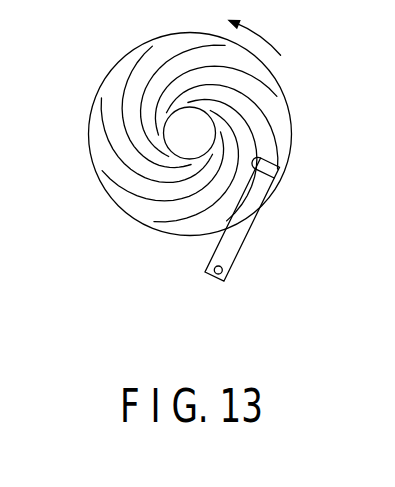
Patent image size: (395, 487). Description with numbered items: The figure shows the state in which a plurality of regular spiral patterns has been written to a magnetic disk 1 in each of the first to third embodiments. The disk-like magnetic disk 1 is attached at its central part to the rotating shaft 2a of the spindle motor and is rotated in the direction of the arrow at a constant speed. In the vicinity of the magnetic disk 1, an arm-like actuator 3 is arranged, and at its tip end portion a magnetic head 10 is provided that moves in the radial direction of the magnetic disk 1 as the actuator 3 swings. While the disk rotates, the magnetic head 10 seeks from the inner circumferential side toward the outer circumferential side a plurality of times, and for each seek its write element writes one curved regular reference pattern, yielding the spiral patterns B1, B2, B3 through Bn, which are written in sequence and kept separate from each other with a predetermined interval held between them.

The magnetic disk 1 is at (124, 56).
The rotating shaft 2a is at (185, 135).
The regular reference pattern B1 is at (253, 123).
The regular reference pattern B2 is at (178, 222).
The regular reference pattern B3 is at (130, 192).
The regular reference pattern Bn is at (276, 146).
The actuator 3 is at (230, 279).
The magnetic head 10 is at (270, 182).